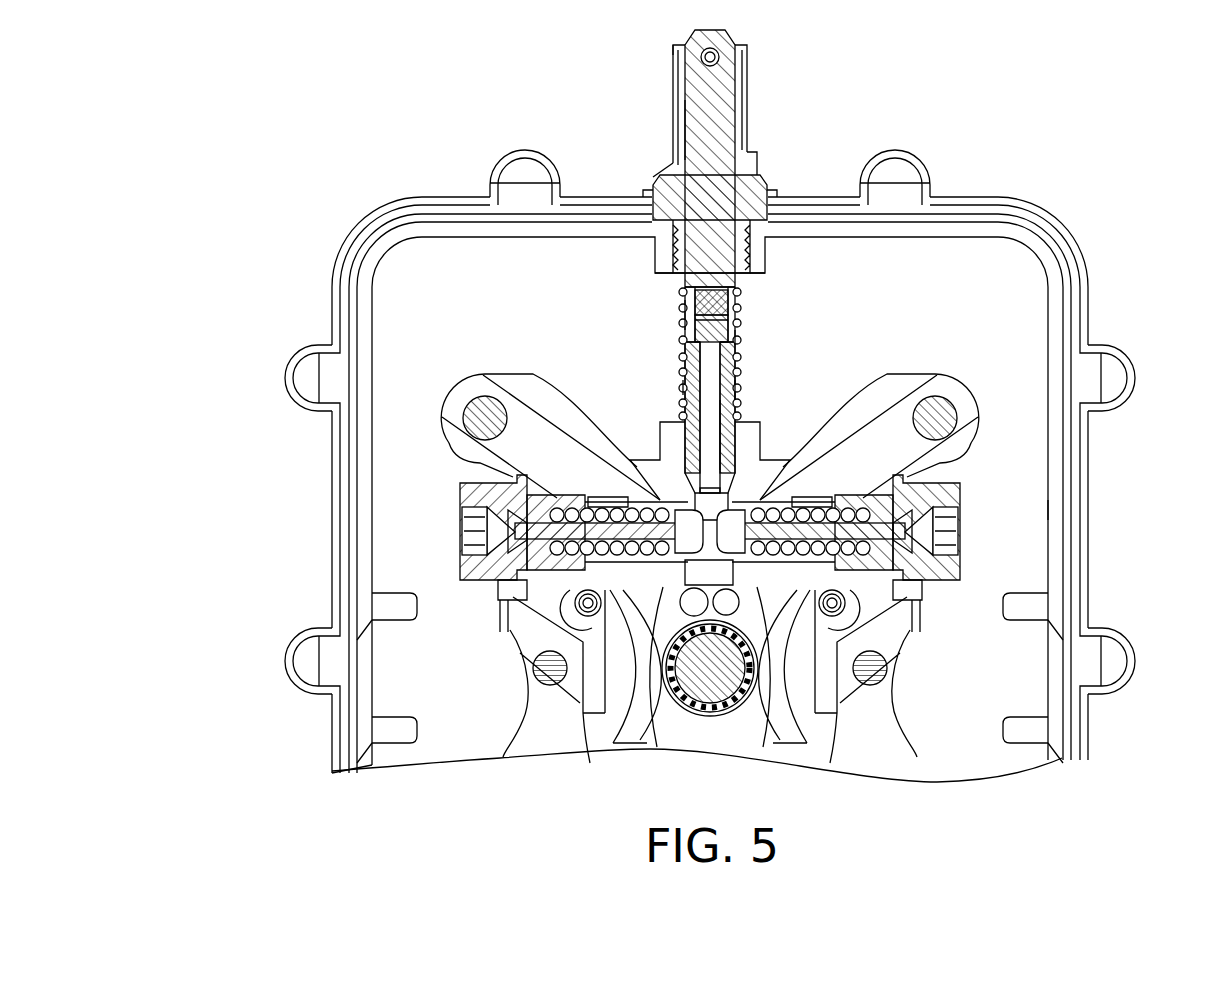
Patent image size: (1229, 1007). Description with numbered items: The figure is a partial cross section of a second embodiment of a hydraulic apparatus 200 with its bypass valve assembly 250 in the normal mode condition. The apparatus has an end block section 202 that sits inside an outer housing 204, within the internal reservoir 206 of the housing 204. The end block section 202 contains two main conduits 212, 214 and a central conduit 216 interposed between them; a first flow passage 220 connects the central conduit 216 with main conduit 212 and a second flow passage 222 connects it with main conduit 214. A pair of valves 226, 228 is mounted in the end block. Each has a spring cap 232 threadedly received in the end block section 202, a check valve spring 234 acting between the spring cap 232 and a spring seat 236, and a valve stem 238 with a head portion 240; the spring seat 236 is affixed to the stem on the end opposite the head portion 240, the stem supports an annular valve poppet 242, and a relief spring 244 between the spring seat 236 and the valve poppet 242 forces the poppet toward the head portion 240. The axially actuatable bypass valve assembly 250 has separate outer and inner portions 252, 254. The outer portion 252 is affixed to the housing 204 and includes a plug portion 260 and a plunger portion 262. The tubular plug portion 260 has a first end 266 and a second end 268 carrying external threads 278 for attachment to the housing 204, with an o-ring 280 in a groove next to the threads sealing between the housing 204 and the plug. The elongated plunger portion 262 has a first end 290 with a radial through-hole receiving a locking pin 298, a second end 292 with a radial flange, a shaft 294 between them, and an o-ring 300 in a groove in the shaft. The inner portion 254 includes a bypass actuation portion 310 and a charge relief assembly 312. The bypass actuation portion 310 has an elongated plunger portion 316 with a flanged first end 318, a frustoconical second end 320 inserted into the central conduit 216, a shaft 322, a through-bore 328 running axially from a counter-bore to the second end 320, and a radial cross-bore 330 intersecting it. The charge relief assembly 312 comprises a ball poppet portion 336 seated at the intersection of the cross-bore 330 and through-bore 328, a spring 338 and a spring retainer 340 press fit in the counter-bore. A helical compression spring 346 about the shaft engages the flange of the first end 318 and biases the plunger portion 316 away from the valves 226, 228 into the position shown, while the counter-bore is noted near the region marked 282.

The hydraulic apparatus 200 is at (284, 136).
The end block section 202 is at (918, 762).
The outer housing 204 is at (342, 750).
The internal reservoir 206 is at (478, 748).
The main conduit 212 is at (588, 757).
The main conduit 214 is at (852, 760).
The central conduit 216 is at (716, 746).
The first flow passage 220 is at (657, 748).
The second flow passage 222 is at (775, 750).
The valve 226 is at (721, 544).
The valve 228 is at (1060, 512).
The spring cap 232 is at (470, 575).
The check valve spring 234 is at (478, 537).
The spring seat 236 is at (458, 521).
The valve stem 238 is at (502, 496).
The head portion 240 is at (674, 512).
The valve poppet 242 is at (598, 510).
The relief spring 244 is at (708, 626).
The bypass valve assembly 250 is at (721, 151).
The outer portion 252 is at (656, 136).
The inner portion 254 is at (719, 426).
The plug portion 260 is at (772, 200).
The plunger portion 262 is at (736, 104).
The first end 266 is at (752, 62).
The second end 268 is at (672, 258).
The external threads 278 is at (752, 250).
The o-ring 280 is at (792, 226).
The flange recess 282 is at (654, 178).
The first end 290 is at (674, 50).
The second end 292 is at (688, 283).
The shaft 294 is at (688, 118).
The locking pin 298 is at (722, 52).
The o-ring 300 is at (748, 170).
The bypass actuation portion 310 is at (756, 405).
The charge relief assembly 312 is at (662, 329).
The plunger portion 316 is at (681, 388).
The first end 318 is at (738, 295).
The second end 320 is at (736, 508).
The shaft 322 is at (736, 385).
The through-bore 328 is at (720, 458).
The cross-bore 330 is at (789, 335).
The poppet portion 336 is at (682, 345).
The spring 338 is at (736, 310).
The spring retainer 340 is at (684, 306).
The helical compression spring 346 is at (737, 392).